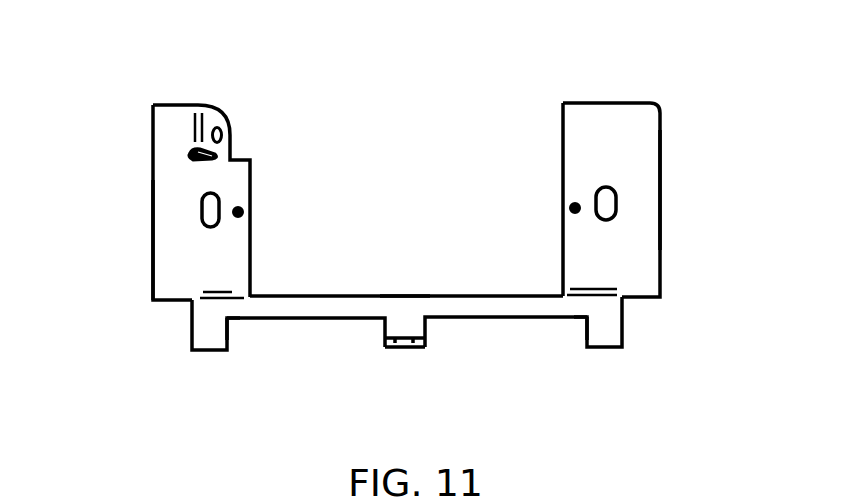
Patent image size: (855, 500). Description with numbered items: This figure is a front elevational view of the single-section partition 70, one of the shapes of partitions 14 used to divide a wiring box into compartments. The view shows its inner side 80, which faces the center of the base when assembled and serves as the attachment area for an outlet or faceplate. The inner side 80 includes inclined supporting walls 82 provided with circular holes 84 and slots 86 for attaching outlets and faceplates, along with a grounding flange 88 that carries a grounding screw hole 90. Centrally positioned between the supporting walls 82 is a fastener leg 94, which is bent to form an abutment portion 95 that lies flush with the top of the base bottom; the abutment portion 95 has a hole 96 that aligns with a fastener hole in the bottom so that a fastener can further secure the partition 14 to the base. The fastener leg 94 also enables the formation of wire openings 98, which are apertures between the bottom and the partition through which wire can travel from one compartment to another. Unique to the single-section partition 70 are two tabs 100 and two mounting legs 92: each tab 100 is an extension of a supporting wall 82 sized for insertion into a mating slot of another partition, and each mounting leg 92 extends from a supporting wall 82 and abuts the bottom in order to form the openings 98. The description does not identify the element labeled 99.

The partition 14 is at (134, 85).
The single-section partition 70 is at (623, 88).
The inner side 80 is at (563, 88).
The supporting wall 82 is at (230, 265).
The circular hole 84 is at (242, 211).
The slot 86 is at (212, 197).
The grounding flange 88 is at (212, 106).
The grounding screw hole 90 is at (226, 129).
The mounting leg 92 is at (192, 342).
The fastener leg 94 is at (426, 323).
The abutment portion 95 is at (385, 341).
The hole 96 is at (410, 348).
The wire opening 98 is at (227, 342).
The lower edge 99 is at (398, 295).
The tab 100 is at (153, 248).